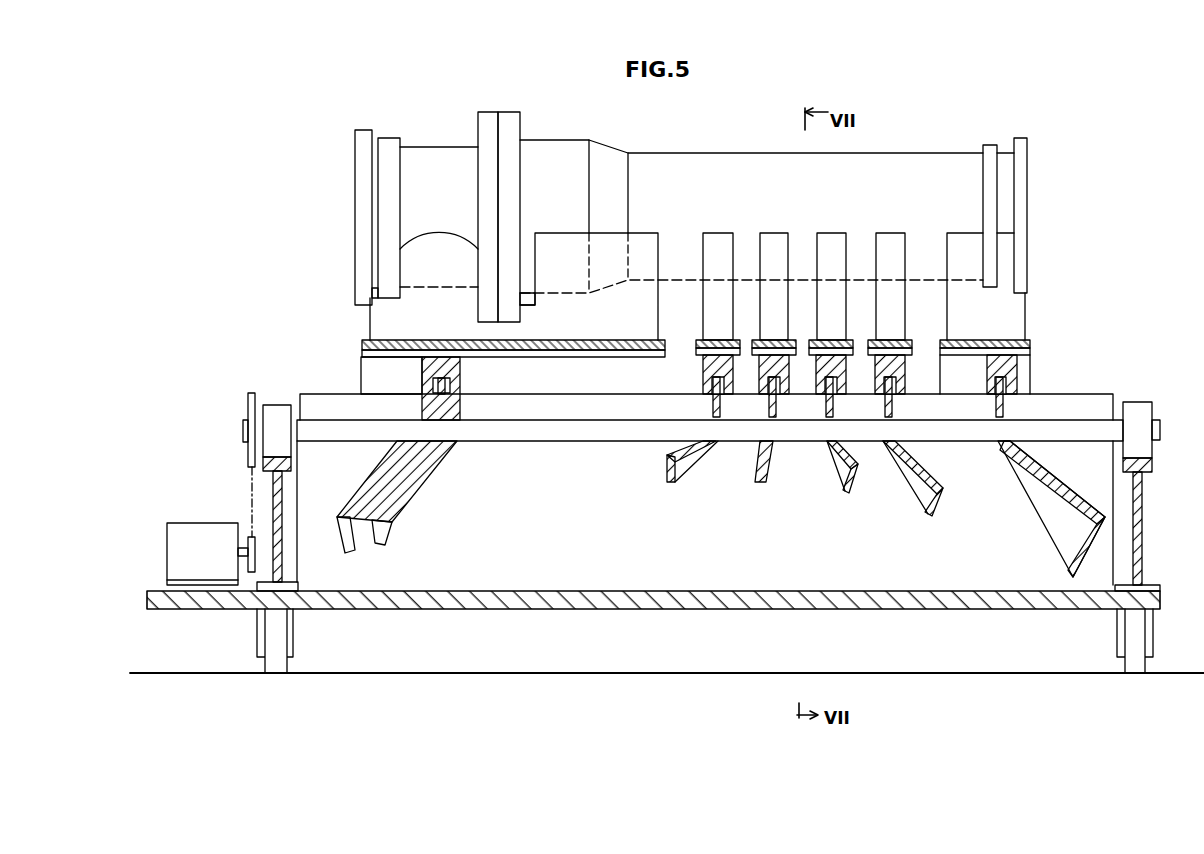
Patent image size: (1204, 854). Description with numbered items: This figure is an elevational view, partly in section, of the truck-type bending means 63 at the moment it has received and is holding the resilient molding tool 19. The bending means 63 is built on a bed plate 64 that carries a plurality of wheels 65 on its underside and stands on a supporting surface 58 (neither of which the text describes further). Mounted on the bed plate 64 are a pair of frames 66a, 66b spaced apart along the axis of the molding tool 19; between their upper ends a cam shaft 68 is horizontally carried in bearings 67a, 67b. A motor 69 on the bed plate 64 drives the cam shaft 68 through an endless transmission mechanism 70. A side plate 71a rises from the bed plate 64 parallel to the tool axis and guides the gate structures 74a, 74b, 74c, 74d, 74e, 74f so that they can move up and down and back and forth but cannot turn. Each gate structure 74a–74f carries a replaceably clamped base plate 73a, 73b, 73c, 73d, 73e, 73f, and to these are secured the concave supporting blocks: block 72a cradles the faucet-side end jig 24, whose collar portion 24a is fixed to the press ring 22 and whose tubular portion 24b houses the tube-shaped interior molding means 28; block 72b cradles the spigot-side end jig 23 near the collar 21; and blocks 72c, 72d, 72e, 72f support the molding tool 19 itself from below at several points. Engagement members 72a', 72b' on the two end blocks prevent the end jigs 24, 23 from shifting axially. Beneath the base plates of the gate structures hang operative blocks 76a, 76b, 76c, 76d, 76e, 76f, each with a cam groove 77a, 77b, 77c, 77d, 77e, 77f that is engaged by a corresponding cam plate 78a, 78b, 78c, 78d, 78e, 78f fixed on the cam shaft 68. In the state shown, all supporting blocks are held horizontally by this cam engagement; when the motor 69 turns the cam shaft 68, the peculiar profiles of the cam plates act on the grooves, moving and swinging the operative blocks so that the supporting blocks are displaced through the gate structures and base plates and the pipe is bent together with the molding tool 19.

The resilient molding tool 19 is at (713, 163).
The collar 21 is at (992, 153).
The press ring 22 is at (515, 122).
The end jig 23 is at (1013, 160).
The end jig 24 is at (449, 138).
The collar portion 24a is at (417, 160).
The tubular portion 24b is at (488, 122).
The interior molding means 28 is at (362, 178).
The floor 58 is at (935, 673).
The bending means 63 is at (1149, 340).
The bed plate 64 is at (735, 606).
The legs 65 is at (275, 640).
The frame 66a is at (282, 565).
The frame 66b is at (1143, 540).
The bearing 67a is at (279, 410).
The bearing 67b is at (1150, 410).
The cam shaft 68 is at (560, 443).
The motor 69 is at (192, 525).
The drive disc 70 is at (250, 495).
The side plate 71a is at (1115, 396).
The supporting block 72a is at (485, 286).
The engagement member 72a' is at (439, 222).
The supporting block 72b is at (1015, 286).
The engagement member 72b' is at (1046, 236).
The supporting block 72c is at (725, 302).
The supporting block 72d is at (783, 308).
The supporting block 72e is at (840, 313).
The supporting block 72f is at (898, 312).
The base plate 73a is at (558, 342).
The base plate 73b is at (1022, 341).
The base plate 73c is at (703, 342).
The base plate 73d is at (745, 342).
The base plate 73e is at (807, 343).
The base plate 73f is at (897, 342).
The gate structure 74a is at (360, 368).
The gate structure 74b is at (1032, 352).
The gate structure 74c is at (705, 353).
The gate structure 74d is at (760, 353).
The gate structure 74e is at (862, 352).
The gate structure 74f is at (905, 355).
The operative block 76a is at (462, 362).
The operative block 76b is at (1020, 370).
The operative block 76c is at (700, 370).
The operative block 76d is at (768, 398).
The operative block 76e is at (830, 398).
The operative block 76f is at (910, 395).
The cam groove 77a is at (452, 386).
The cam groove 77b is at (1017, 386).
The cam groove 77c is at (712, 396).
The cam groove 77d is at (773, 404).
The cam groove 77e is at (833, 404).
The cam groove 77f is at (892, 404).
The cam plate 78a is at (385, 545).
The cam plate 78b is at (1070, 580).
The cam plate 78c is at (672, 484).
The cam plate 78d is at (760, 484).
The cam plate 78e is at (850, 494).
The cam plate 78f is at (935, 516).